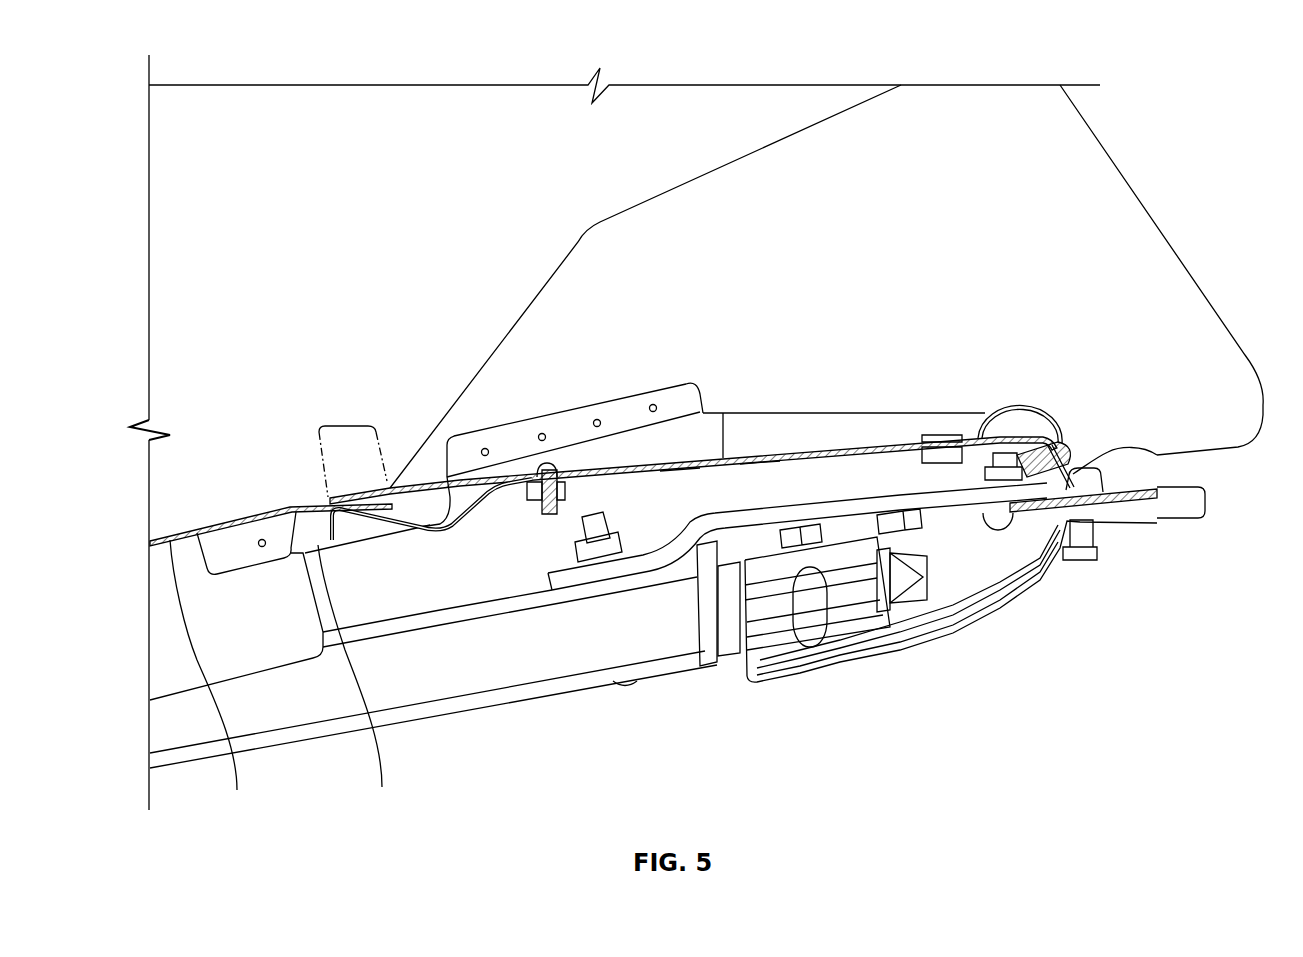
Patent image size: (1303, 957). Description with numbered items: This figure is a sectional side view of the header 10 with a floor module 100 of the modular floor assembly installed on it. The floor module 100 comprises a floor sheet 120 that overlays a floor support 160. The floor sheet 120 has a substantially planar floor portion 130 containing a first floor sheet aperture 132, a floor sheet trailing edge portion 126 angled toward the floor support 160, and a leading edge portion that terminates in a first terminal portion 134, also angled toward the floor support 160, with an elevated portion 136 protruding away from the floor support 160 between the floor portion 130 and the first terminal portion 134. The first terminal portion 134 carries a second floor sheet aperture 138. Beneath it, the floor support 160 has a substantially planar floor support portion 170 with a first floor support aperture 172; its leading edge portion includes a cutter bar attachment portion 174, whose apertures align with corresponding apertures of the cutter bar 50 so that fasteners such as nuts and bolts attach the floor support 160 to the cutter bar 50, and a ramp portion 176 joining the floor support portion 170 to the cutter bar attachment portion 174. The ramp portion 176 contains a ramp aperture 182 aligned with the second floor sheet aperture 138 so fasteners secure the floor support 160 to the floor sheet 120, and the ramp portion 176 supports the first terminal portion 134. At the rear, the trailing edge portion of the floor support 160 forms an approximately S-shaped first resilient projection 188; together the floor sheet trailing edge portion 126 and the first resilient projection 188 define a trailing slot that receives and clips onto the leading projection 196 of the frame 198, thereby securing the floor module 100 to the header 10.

The header 10 is at (1165, 154).
The cutter bar 50 is at (1208, 500).
The floor module 100 is at (829, 436).
The floor sheet 120 is at (668, 452).
The floor sheet trailing edge portion 126 is at (343, 426).
The floor portion 130 is at (790, 454).
The first floor sheet aperture 132 is at (537, 490).
The first terminal portion 134 is at (1107, 527).
The elevated portion 136 is at (1026, 401).
The second floor sheet aperture 138 is at (1082, 468).
The floor support 160 is at (680, 482).
The floor support portion 170 is at (753, 466).
The first floor support aperture 172 is at (574, 478).
The cutter bar attachment portion 174 is at (1143, 478).
The ramp portion 176 is at (1044, 530).
The ramp aperture 182 is at (1065, 447).
The first resilient projection 188 is at (430, 530).
The leading projection 196 is at (318, 521).
The frame 198 is at (214, 681).